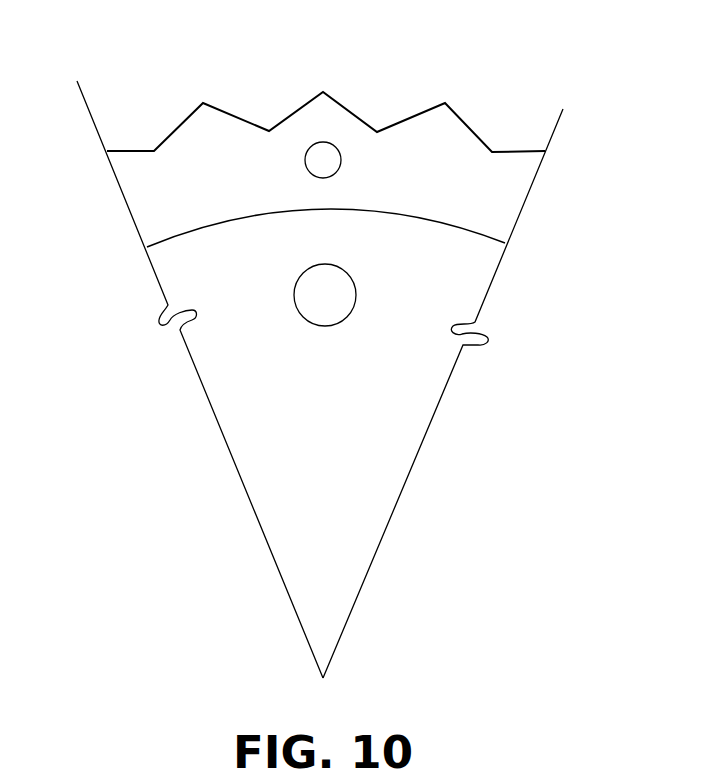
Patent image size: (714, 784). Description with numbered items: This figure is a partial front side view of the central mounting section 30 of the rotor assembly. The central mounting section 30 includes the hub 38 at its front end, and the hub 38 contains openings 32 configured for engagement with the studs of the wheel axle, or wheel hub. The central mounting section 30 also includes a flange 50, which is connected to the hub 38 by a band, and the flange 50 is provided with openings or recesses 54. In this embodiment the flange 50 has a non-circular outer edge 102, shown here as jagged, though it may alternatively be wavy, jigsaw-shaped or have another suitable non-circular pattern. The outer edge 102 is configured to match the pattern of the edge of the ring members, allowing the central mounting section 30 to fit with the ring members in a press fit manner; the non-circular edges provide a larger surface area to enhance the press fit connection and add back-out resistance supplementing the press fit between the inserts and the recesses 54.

The central mounting section 30 is at (200, 413).
The openings 32 is at (298, 315).
The hub 38 is at (403, 412).
The flange 50 is at (403, 177).
The openings or recesses 54 is at (305, 167).
The non-circular outer edge 102 is at (248, 120).